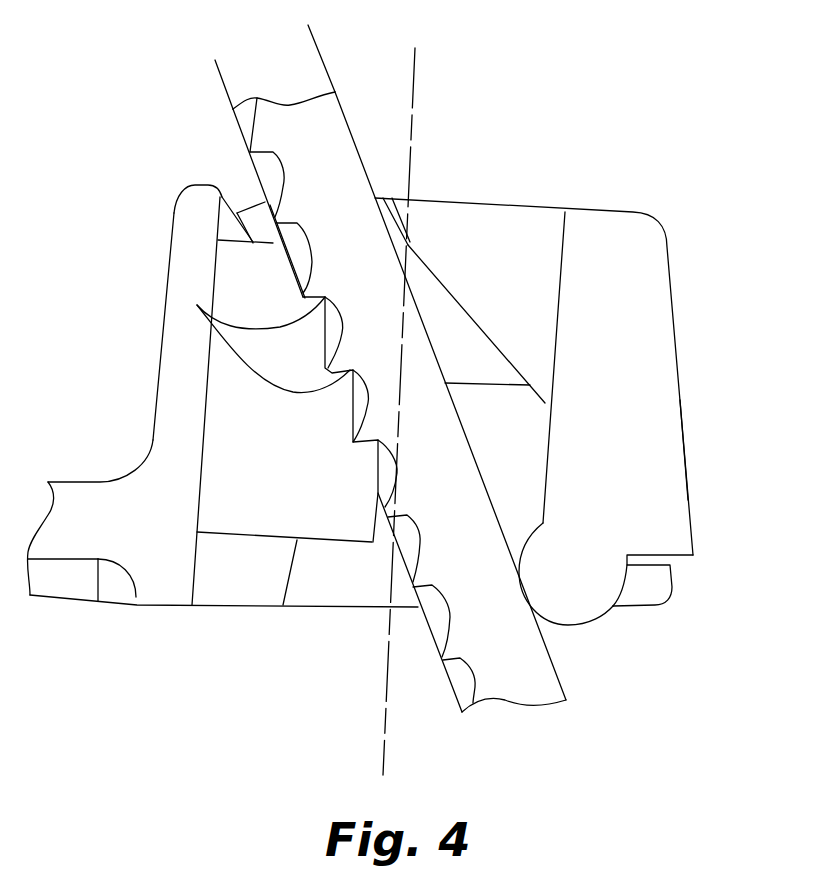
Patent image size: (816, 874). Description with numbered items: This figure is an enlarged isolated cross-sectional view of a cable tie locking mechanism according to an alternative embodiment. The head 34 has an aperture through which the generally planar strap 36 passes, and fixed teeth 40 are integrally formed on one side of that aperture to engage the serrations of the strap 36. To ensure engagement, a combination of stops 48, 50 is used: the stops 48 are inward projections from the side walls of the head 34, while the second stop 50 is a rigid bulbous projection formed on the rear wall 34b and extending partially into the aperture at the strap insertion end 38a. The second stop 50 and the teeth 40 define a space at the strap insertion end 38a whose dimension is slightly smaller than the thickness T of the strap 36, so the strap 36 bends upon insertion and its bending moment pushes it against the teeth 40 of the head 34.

The thickness of the strap T is at (312, 33).
The strap 36 is at (317, 160).
The fixed teeth 40 is at (197, 305).
The strap insertion end 38a is at (325, 587).
The head 34 is at (640, 262).
The rear wall 34b is at (645, 422).
The stops 48 is at (477, 237).
The second stop 50 is at (582, 583).